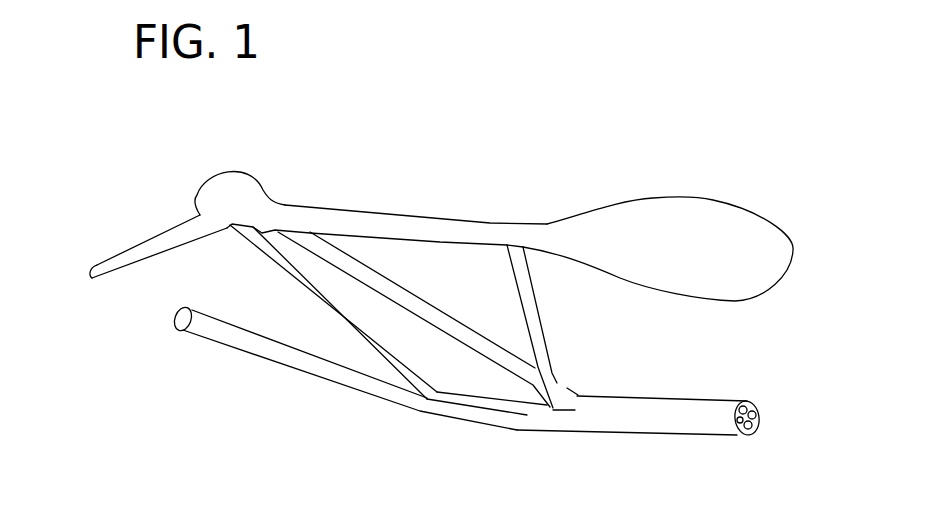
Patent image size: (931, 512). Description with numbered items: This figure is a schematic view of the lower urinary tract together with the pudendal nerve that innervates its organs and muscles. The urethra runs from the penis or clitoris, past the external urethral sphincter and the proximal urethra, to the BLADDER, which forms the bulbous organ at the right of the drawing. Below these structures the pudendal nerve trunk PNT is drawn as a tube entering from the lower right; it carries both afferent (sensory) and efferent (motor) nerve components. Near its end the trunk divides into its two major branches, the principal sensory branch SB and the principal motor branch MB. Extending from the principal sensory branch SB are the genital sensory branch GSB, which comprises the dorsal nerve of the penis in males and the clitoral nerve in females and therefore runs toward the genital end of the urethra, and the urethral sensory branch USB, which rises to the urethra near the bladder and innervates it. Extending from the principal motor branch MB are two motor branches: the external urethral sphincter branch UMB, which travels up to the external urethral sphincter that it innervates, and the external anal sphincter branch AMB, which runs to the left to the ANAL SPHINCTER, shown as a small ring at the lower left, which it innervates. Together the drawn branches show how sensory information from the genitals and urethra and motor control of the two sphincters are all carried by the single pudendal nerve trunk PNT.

The bladder BLADDER is at (653, 233).
The external urethral sphincter branch UMB is at (290, 277).
The genital sensory branch GSB is at (402, 284).
The urethral sensory branch USB is at (530, 297).
The principal sensory branch SB is at (557, 383).
The pudendal nerve trunk PNT is at (670, 397).
The principal motor branch MB is at (525, 422).
The external anal sphincter branch AMB is at (260, 344).
The anal sphincter ANAL SPHINCTER is at (170, 323).